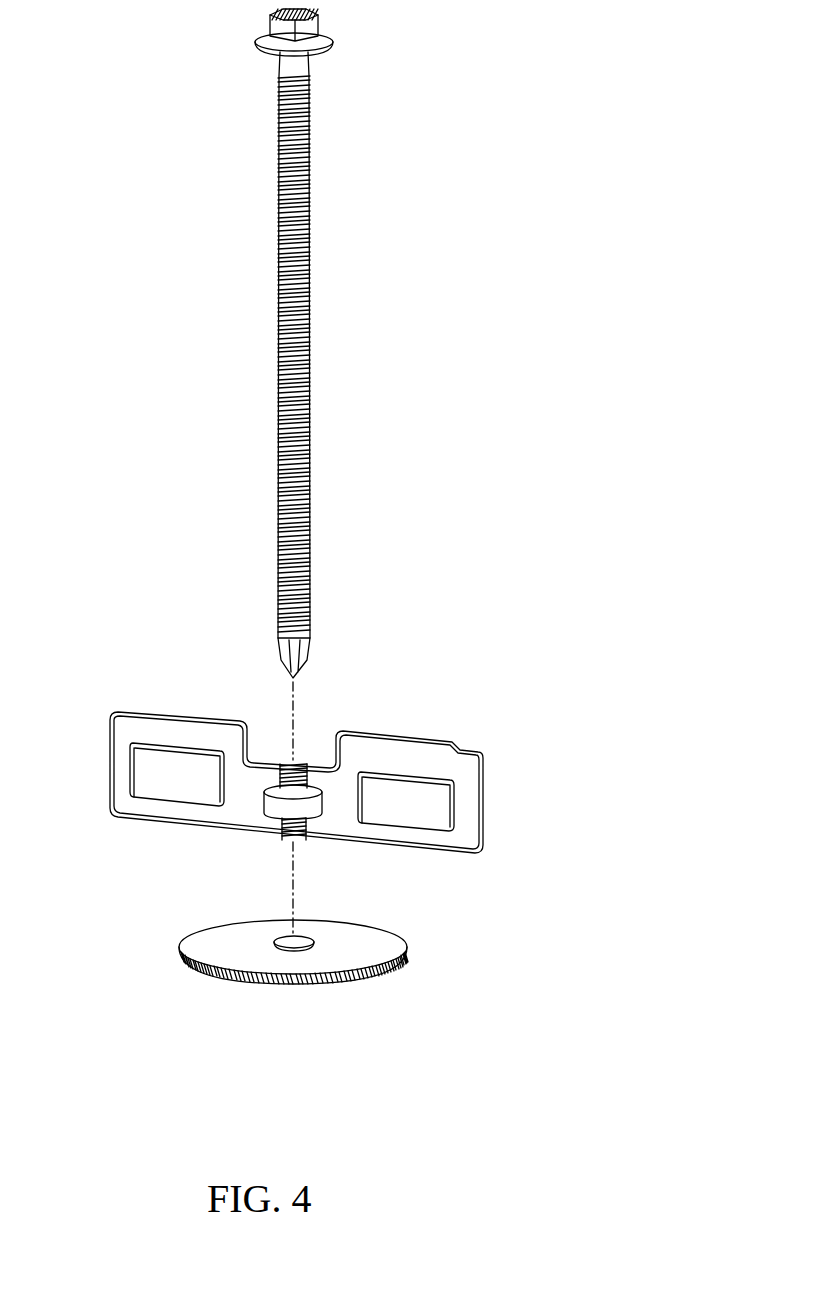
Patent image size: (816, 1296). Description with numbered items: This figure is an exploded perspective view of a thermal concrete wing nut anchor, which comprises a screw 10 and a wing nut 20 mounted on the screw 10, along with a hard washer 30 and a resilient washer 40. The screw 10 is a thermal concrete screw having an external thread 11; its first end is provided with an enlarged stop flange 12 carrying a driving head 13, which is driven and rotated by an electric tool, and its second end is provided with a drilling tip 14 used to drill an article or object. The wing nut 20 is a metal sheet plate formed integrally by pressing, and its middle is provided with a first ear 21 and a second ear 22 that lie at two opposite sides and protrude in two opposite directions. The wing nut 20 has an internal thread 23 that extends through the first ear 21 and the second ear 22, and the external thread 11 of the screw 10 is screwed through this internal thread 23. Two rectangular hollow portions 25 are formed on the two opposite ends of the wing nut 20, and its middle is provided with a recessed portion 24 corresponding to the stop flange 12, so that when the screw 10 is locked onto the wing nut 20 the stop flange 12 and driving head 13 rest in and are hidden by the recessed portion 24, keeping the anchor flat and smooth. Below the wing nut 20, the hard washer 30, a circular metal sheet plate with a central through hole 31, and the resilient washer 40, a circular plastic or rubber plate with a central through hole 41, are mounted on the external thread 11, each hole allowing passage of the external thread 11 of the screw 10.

The screw 10 is at (176, 171).
The external thread 11 is at (278, 348).
The stop flange 12 is at (333, 43).
The driving head 13 is at (272, 23).
The drilling tip 14 is at (307, 657).
The wing nut 20 is at (449, 666).
The first ear 21 is at (278, 812).
The second ear 22 is at (311, 762).
The internal thread 23 is at (291, 768).
The recessed portion 24 is at (288, 722).
The hollow portion 25 is at (185, 788).
The hard washer 30 is at (222, 938).
The through hole 31 is at (287, 938).
The resilient washer 40 is at (405, 957).
The through hole 41 is at (305, 938).